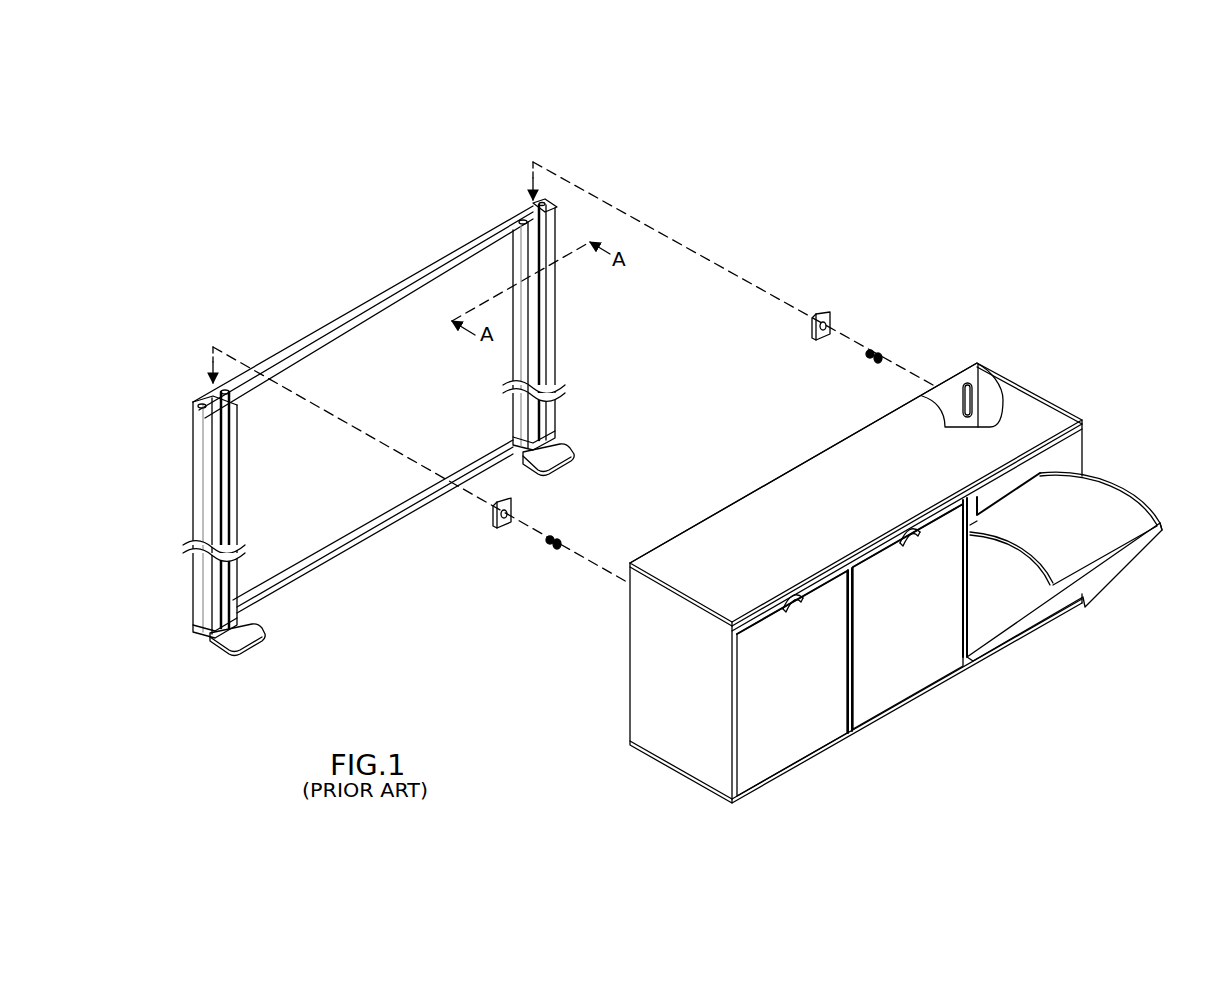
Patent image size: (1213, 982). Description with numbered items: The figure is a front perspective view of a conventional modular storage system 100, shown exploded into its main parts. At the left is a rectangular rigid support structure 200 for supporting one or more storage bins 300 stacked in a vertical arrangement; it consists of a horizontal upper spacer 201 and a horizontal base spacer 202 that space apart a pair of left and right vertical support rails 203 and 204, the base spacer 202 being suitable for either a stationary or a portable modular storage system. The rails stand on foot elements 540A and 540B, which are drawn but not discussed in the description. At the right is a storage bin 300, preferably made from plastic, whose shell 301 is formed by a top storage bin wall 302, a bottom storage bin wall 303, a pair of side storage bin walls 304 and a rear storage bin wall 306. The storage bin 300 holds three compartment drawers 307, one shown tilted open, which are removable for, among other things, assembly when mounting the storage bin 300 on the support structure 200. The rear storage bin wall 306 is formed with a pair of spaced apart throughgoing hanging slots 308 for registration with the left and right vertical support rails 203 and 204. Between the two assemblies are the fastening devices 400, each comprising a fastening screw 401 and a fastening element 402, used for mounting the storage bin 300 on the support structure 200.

The modular storage system 100 is at (1015, 168).
The support structure 200 is at (283, 266).
The upper spacer 201 is at (437, 270).
The base spacer 202 is at (358, 564).
The left vertical support rail 203 is at (200, 520).
The right vertical support rail 204 is at (557, 360).
The storage bin 300 is at (1068, 340).
The shell 301 is at (1073, 376).
The top storage bin wall 302 is at (843, 524).
The bottom storage bin wall 303 is at (755, 797).
The side storage bin wall 304 is at (655, 694).
The rear storage bin wall 306 is at (780, 478).
The compartment drawer 307 is at (818, 727).
The hanging slot 308 is at (963, 380).
The fastening device 400 is at (942, 310).
The fastening screw 401 is at (878, 352).
The fastening element 402 is at (830, 322).
The left foot 540A is at (242, 637).
The right foot 540B is at (553, 457).